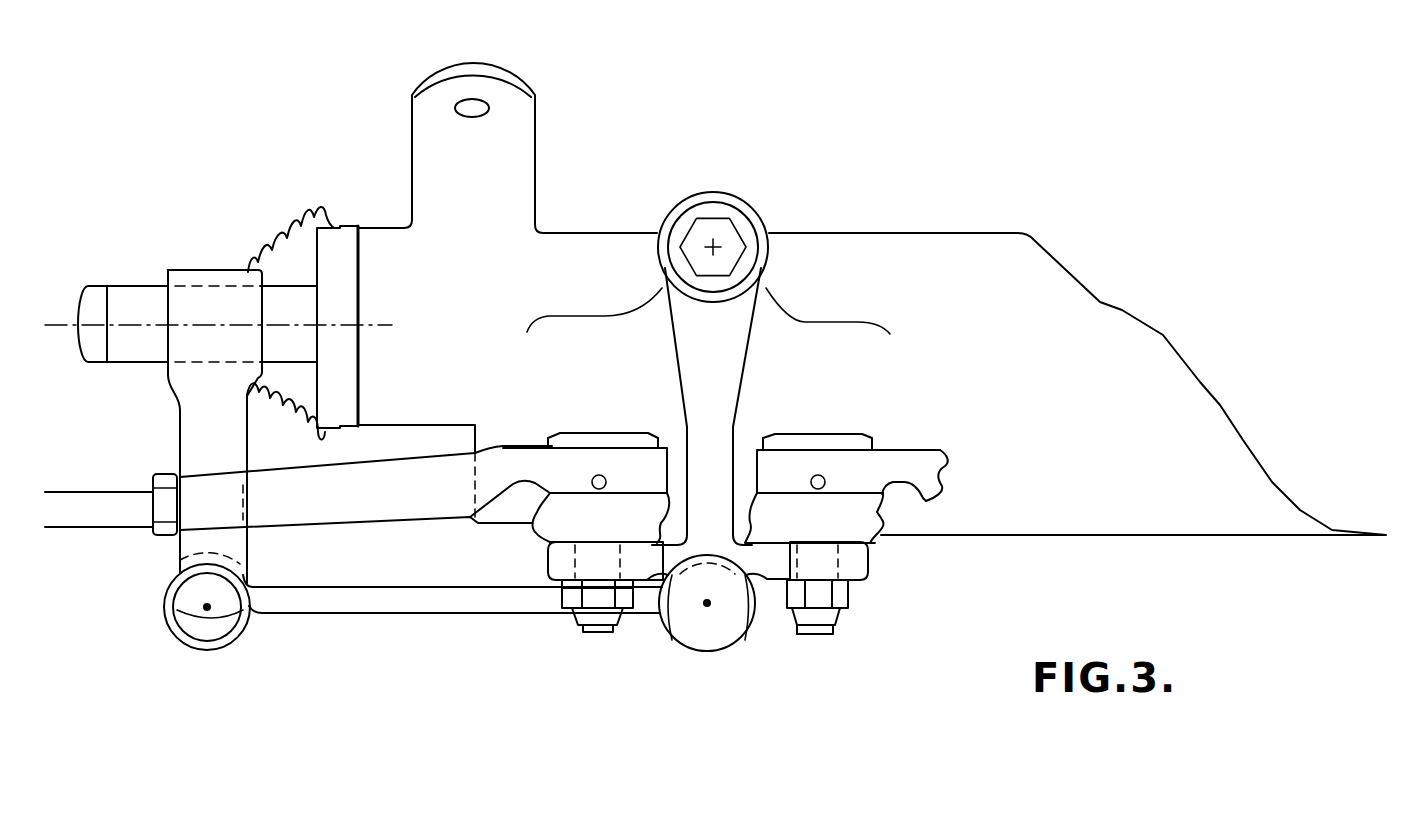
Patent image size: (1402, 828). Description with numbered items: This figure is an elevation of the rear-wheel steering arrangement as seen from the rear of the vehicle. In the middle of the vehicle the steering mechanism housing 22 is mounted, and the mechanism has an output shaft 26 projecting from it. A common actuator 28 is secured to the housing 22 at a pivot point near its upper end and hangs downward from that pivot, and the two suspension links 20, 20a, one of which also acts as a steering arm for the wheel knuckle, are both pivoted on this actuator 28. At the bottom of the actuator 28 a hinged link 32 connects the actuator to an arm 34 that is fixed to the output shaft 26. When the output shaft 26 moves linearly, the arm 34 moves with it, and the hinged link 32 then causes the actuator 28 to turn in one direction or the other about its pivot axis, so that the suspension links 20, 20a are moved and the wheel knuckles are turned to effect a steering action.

The suspension link 20 is at (115, 517).
The suspension link 20a is at (908, 467).
The steering mechanism housing 22 is at (930, 263).
The output shaft 26 is at (133, 300).
The actuator 28 is at (720, 378).
The hinged link 32 is at (422, 613).
The arm 34 is at (200, 420).